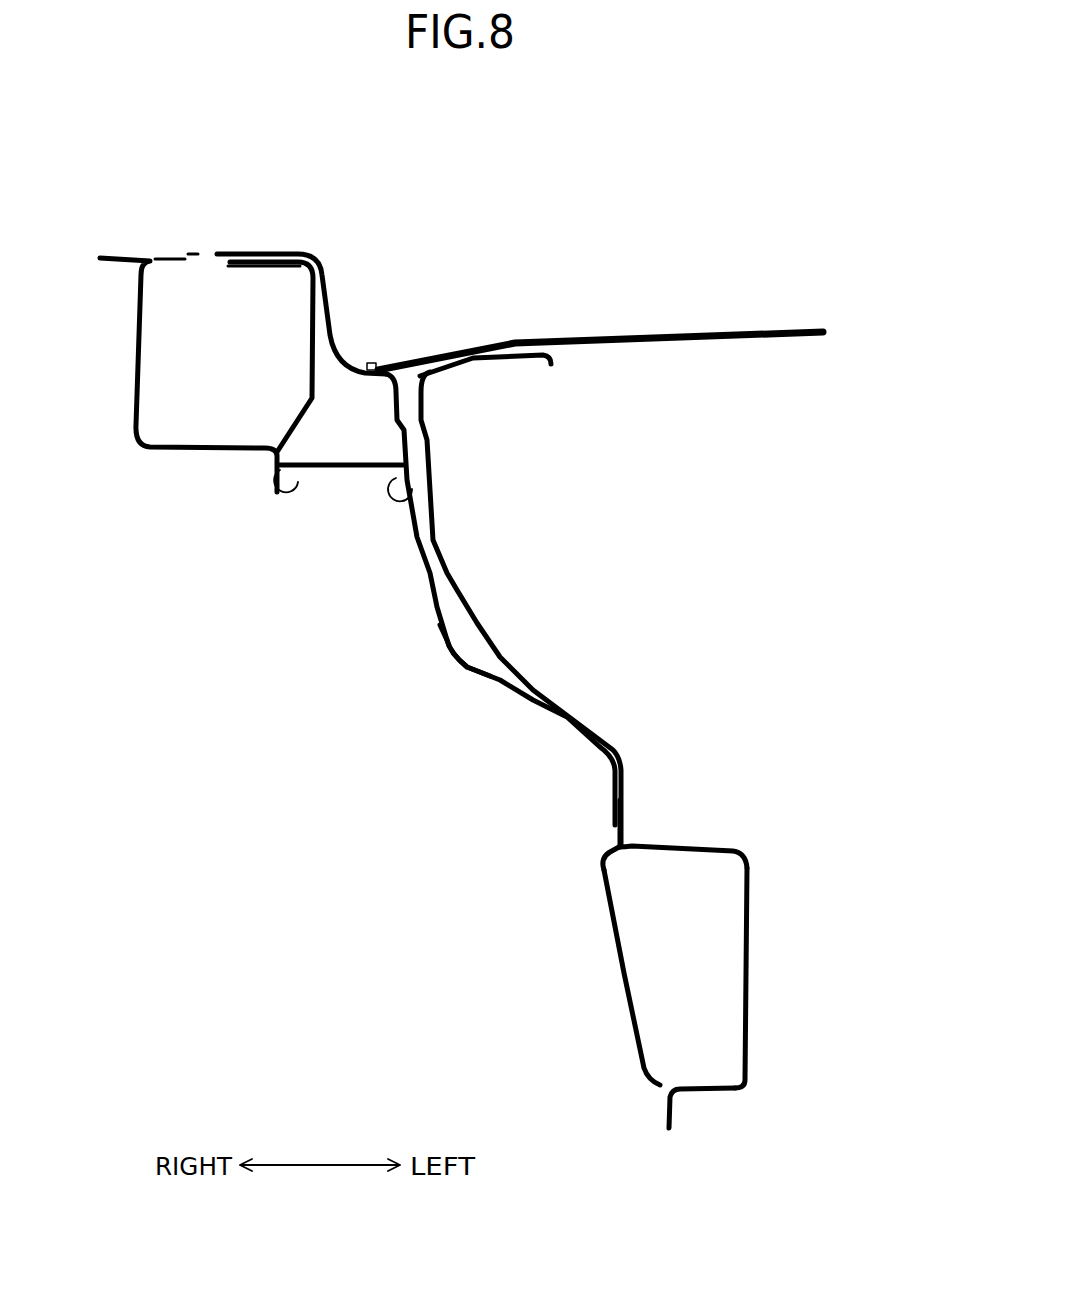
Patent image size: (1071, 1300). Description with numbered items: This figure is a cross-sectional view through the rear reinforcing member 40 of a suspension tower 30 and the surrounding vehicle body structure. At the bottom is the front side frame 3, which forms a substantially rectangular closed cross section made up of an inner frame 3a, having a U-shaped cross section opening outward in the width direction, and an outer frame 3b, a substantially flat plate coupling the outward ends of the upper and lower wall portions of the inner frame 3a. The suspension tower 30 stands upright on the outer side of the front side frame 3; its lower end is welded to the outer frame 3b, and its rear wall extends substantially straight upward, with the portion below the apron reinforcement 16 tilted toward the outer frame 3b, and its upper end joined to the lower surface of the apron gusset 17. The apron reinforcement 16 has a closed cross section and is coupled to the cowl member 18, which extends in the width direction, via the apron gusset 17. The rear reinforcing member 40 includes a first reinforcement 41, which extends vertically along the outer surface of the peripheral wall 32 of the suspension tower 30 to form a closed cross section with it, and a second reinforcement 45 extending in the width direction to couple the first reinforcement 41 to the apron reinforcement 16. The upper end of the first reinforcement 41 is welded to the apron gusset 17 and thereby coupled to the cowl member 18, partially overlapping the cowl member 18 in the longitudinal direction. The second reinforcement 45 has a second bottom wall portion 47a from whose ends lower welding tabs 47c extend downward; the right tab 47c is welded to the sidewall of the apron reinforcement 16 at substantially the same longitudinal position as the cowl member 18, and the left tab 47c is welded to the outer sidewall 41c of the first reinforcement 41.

The front side frame 3 is at (686, 947).
The inner frame 3a is at (752, 983).
The outer frame 3b is at (622, 975).
The apron reinforcement 16 is at (138, 471).
The apron gusset 17 is at (329, 300).
The cowl member 18 is at (643, 310).
The suspension tower 30 is at (521, 608).
The peripheral wall 32 is at (473, 622).
The rear reinforcing member 40 is at (411, 610).
The first reinforcement 41 is at (446, 610).
The outer sidewall 41c is at (450, 655).
The second reinforcement 45 is at (357, 503).
The second bottom wall portion 47a is at (338, 462).
The lower welding tab 47c is at (293, 490).